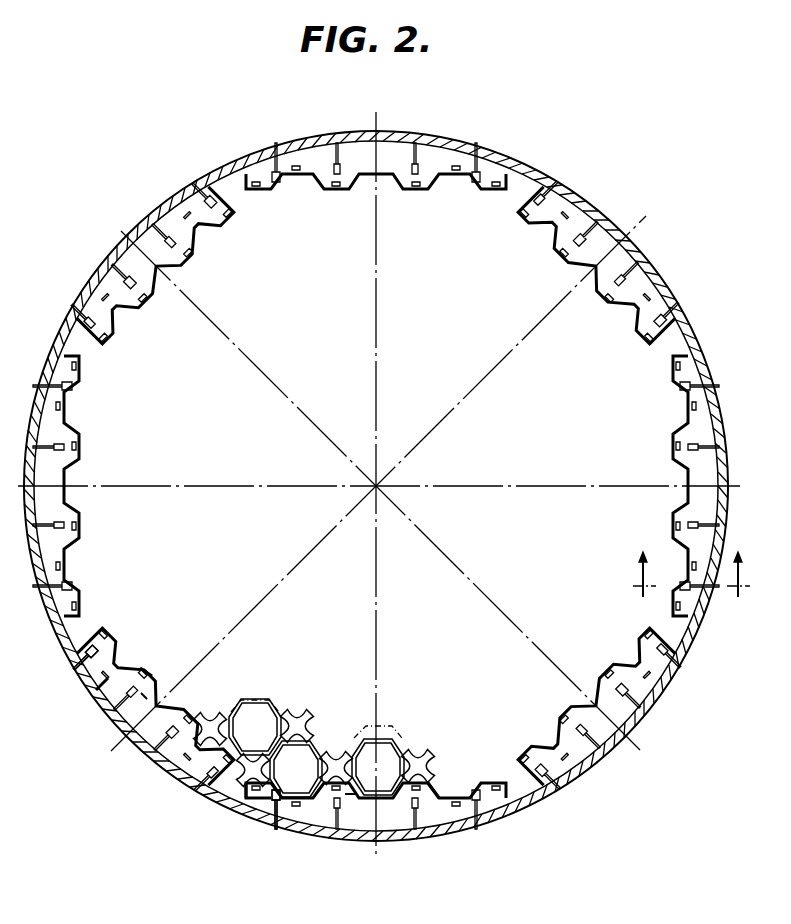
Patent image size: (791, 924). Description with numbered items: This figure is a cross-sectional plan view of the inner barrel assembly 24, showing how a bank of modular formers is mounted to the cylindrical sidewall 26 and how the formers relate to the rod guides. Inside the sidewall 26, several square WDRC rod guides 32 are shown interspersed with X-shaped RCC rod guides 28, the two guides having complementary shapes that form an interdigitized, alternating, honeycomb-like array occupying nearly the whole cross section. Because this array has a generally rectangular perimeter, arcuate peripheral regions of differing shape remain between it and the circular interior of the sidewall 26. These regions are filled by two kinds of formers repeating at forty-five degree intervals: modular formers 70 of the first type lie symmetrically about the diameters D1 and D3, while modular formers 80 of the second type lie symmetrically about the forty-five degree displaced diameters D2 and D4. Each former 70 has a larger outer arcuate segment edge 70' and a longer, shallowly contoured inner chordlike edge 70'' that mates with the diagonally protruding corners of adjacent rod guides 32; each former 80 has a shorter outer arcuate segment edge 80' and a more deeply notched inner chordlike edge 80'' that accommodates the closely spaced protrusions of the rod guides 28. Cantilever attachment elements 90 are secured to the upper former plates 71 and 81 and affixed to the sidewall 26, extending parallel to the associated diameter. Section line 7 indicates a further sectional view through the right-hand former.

The inner barrel assembly 24 is at (88, 208).
The cylindrical sidewall 26 is at (160, 211).
The RCC rod guide 28 is at (212, 716).
The WDRC rod guide 32 is at (267, 740).
The modular former of the first type 70 is at (376, 516).
The outer arcuate segment edge 70' is at (371, 832).
The inner chordlike edge 70'' is at (460, 770).
The former plate 71 is at (365, 824).
The modular former of the second type 80 is at (376, 497).
The outer arcuate segment edge 80' is at (85, 708).
The inner chordlike edge 80'' is at (167, 652).
The former plate 81 is at (147, 719).
The cantilever attachment element 90 is at (76, 653).
The section line 7- 7 is at (693, 574).
The diameter D1 is at (380, 600).
The diameter D2 is at (298, 565).
The diameter D3 is at (480, 490).
The diameter D4 is at (291, 402).